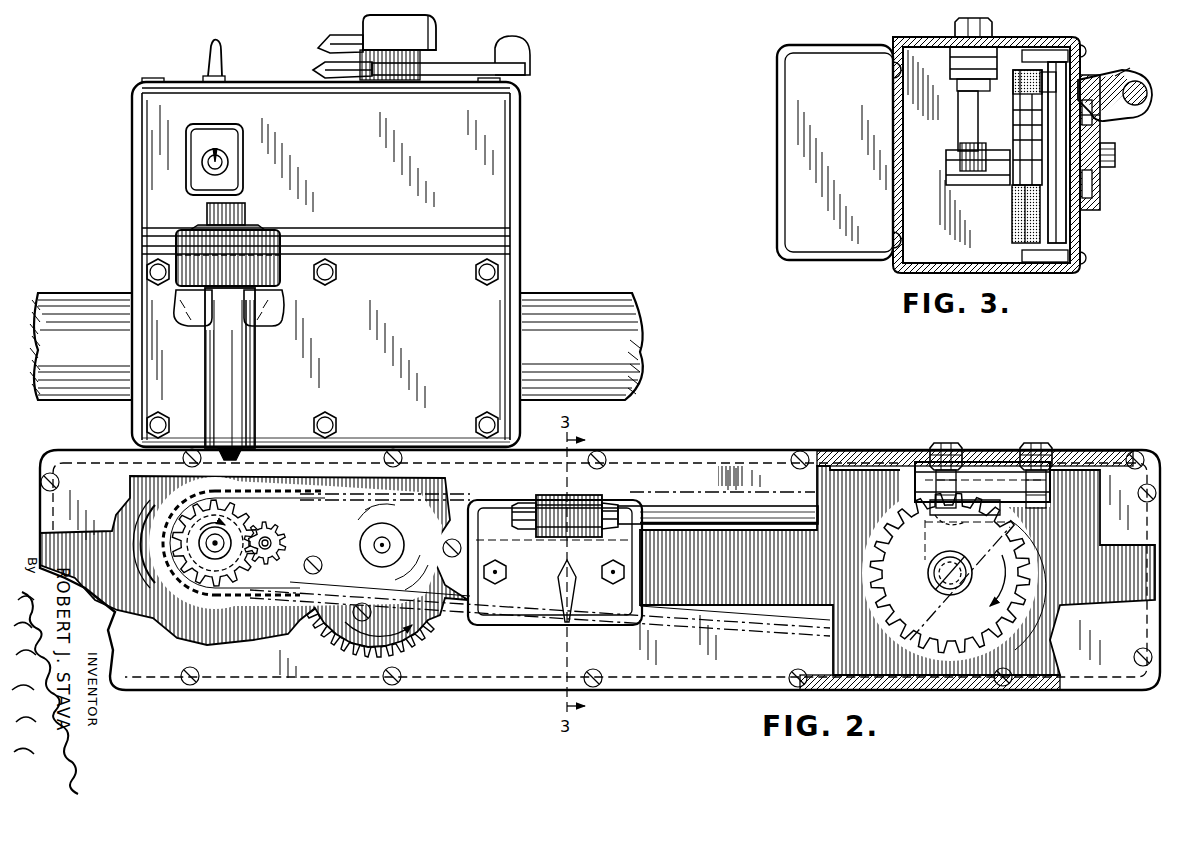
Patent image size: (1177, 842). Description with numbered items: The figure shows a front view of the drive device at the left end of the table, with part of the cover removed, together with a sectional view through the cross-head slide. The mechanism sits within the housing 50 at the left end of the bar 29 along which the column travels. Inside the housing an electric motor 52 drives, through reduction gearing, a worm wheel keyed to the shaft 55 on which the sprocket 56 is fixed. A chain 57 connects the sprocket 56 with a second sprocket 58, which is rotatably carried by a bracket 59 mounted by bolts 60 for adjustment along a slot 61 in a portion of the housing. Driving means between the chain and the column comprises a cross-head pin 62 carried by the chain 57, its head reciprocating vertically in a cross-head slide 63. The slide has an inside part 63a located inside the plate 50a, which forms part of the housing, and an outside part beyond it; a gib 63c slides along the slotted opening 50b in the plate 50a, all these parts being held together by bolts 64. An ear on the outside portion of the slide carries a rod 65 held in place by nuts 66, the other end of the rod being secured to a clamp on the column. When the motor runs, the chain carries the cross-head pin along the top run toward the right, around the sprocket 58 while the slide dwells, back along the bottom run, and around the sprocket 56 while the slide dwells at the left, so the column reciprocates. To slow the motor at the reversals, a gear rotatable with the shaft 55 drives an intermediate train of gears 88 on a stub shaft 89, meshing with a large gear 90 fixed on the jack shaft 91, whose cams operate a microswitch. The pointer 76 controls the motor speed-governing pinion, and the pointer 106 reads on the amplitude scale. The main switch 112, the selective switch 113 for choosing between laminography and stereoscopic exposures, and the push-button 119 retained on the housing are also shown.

In FIG. 2, the bar 29 is at (633, 346).
In FIG. 2, the housing 50 is at (500, 216).
In FIG. 2, the plate 50a is at (668, 463).
In FIG. 3, the plate 50a is at (1080, 242).
In FIG. 2, the slotted opening 50b is at (704, 540).
In FIG. 2, the electric motor 52 is at (202, 508).
In FIG. 2, the shaft 55 is at (205, 560).
In FIG. 2, the sprocket 56 is at (218, 578).
In FIG. 3, the chain 57 is at (1012, 212).
In FIG. 2, the sprocket 58 is at (958, 573).
In FIG. 3, the sprocket 58 is at (1013, 132).
In FIG. 2, the bracket 59 is at (972, 500).
In FIG. 3, the bracket 59 is at (960, 110).
In FIG. 2, the bolts 60 is at (946, 444).
In FIG. 3, the bolts 60 is at (956, 28).
In FIG. 2, the slot 61 is at (1068, 470).
In FIG. 3, the cross-head pin 62 is at (1082, 78).
In FIG. 2, the cross-head slide 63 is at (500, 624).
In FIG. 3, the cross-head slide 63 is at (1067, 213).
In FIG. 2, the inside part of cross-head slide 63a is at (556, 497).
In FIG. 3, the inside part of cross-head slide 63a is at (1118, 72).
In FIG. 3, the gib 63c is at (1100, 128).
In FIG. 2, the bolts 64 is at (483, 572).
In FIG. 3, the bolts 64 is at (1114, 158).
In FIG. 2, the rod 65 is at (757, 516).
In FIG. 3, the rod 65 is at (1140, 78).
In FIG. 2, the nuts 66 is at (524, 507).
In FIG. 2, the pointer 76 is at (313, 70).
In FIG. 2, the intermediate train of gears 88 is at (272, 546).
In FIG. 2, the stub shaft 89 is at (270, 536).
In FIG. 2, the large gear 90 is at (370, 594).
In FIG. 2, the jack shaft 91 is at (374, 549).
In FIG. 2, the pointer 106 is at (320, 46).
In FIG. 2, the main switch 112 is at (204, 157).
In FIG. 2, the selective switch 113 is at (208, 52).
In FIG. 2, the push-button 119 is at (203, 222).